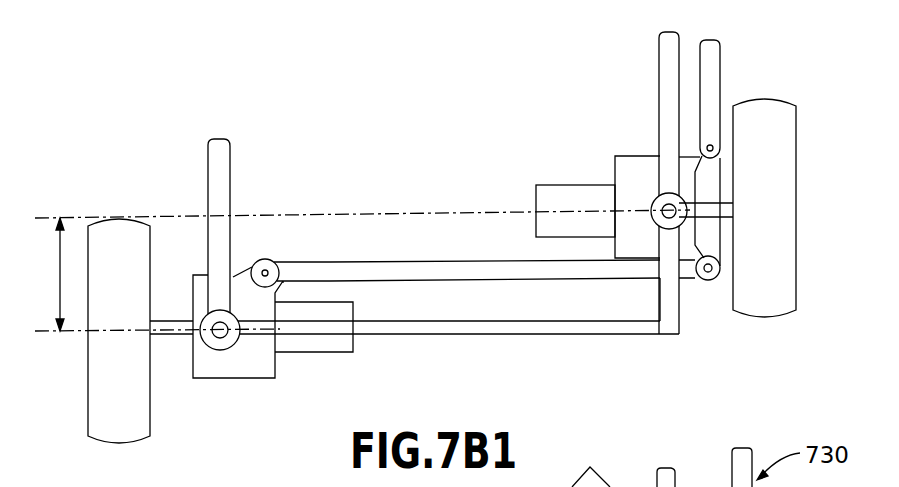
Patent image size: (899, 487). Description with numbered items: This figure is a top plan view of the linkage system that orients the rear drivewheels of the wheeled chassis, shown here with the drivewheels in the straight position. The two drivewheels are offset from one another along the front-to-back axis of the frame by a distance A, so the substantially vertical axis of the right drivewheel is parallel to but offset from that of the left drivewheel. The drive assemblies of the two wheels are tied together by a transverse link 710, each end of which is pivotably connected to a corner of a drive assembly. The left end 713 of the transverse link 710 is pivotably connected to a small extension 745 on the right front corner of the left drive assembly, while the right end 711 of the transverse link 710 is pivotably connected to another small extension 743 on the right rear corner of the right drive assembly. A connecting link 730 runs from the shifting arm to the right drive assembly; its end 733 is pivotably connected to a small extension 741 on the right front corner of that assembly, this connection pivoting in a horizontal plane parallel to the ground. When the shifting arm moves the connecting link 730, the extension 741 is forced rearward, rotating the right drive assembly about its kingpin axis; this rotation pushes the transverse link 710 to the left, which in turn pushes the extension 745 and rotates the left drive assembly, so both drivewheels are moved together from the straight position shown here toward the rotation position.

The offset distance A is at (60, 283).
The small extension 745 is at (257, 260).
The left end of transverse link 713 is at (288, 270).
The transverse link 710 is at (440, 268).
The right end of transverse link 711 is at (642, 265).
The end of connecting link 733 is at (712, 108).
The small extension 741 is at (695, 160).
The connecting link 730 is at (723, 61).
The small extension 743 is at (690, 252).